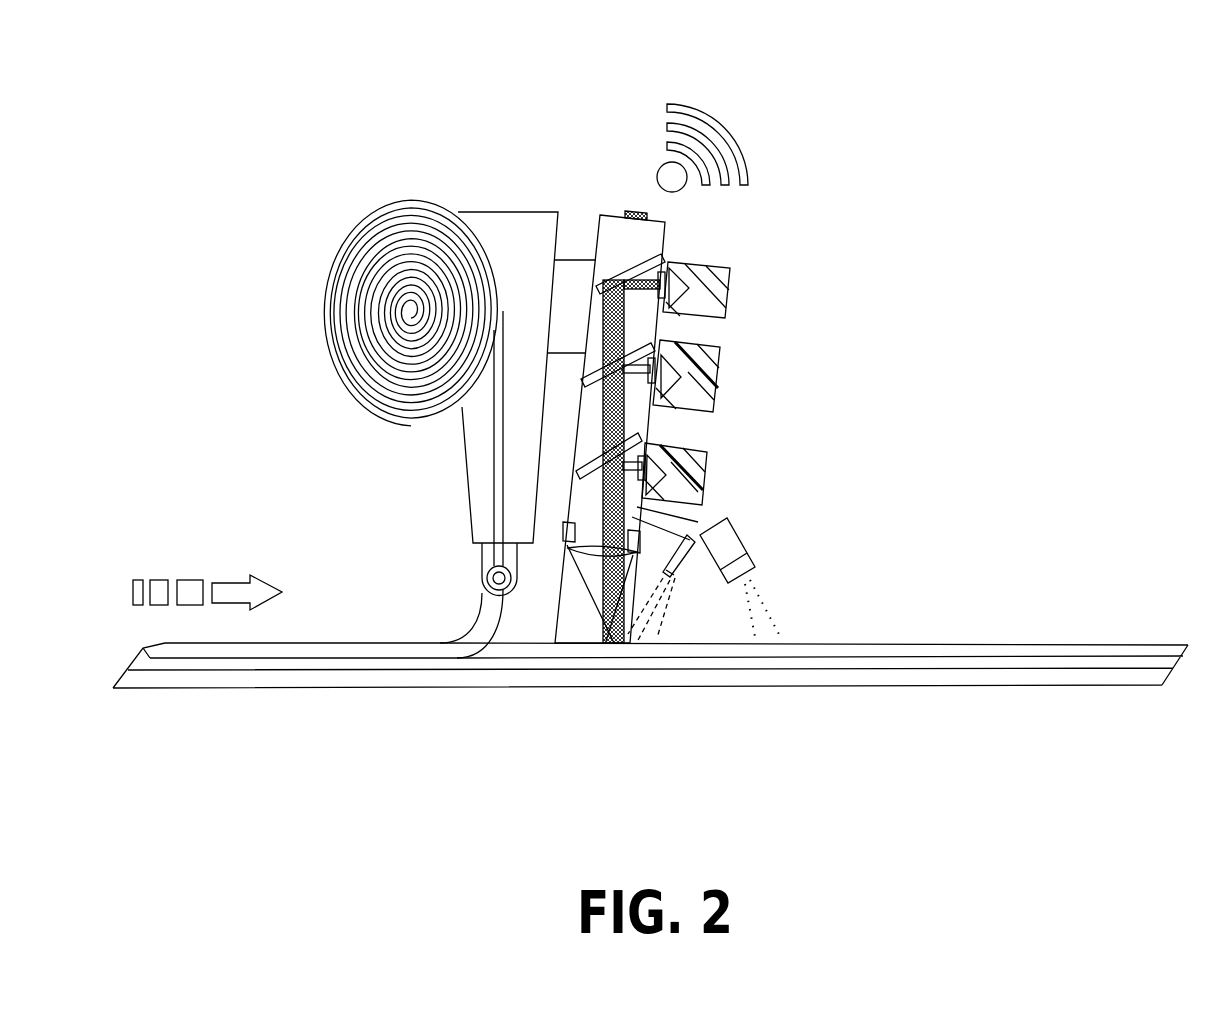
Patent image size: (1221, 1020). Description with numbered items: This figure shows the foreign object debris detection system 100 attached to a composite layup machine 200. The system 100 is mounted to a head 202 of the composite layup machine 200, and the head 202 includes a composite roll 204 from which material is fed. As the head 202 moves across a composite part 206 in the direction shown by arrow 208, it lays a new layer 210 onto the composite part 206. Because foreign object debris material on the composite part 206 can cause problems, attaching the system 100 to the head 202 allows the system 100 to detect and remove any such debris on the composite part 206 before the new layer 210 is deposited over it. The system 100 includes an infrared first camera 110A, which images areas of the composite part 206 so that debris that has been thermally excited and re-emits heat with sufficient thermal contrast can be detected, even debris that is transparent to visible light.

The composite layup machine 200 is at (430, 92).
The head 202 is at (530, 178).
The composite roll 204 is at (292, 290).
The system 100 is at (762, 230).
The first camera 110A is at (728, 458).
The composite part 206 is at (451, 718).
The arrow 208 is at (193, 558).
The new layer 210 is at (436, 611).